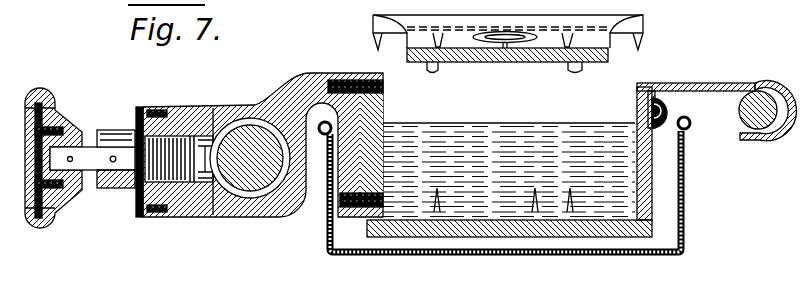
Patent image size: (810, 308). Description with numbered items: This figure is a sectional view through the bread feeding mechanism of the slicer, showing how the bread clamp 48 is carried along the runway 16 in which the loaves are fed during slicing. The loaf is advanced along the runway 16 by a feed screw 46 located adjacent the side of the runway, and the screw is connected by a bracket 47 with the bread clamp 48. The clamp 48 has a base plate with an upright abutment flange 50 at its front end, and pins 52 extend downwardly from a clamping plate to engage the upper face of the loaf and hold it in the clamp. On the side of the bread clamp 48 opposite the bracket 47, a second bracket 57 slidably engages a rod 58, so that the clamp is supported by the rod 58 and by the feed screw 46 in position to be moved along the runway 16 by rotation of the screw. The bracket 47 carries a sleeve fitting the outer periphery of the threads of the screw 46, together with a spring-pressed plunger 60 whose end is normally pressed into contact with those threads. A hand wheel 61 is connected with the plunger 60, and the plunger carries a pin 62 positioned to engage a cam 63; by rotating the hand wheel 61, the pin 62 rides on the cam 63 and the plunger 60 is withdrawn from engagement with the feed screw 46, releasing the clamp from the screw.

The runway 16 is at (447, 256).
The feed screw 46 is at (260, 172).
The bracket 47 is at (305, 80).
The bread clamp 48 is at (537, 230).
The abutment flange 50 is at (500, 130).
The pins 52 is at (373, 40).
The bracket 57 is at (505, 50).
The rod 58 is at (742, 122).
The spring-pressed plunger 60 is at (88, 172).
The hand wheel 61 is at (43, 222).
The pin 62 is at (115, 156).
The cam 63 is at (100, 136).